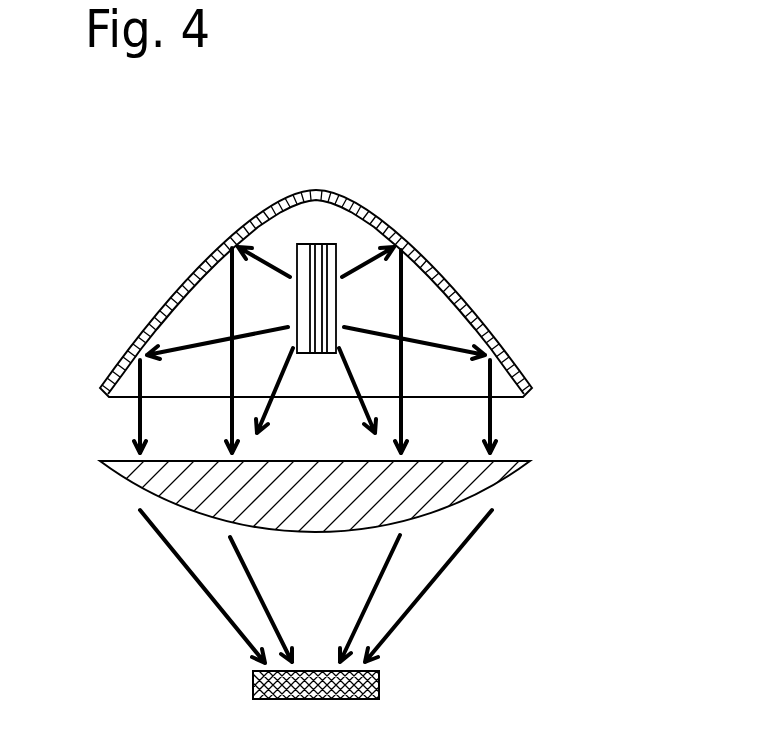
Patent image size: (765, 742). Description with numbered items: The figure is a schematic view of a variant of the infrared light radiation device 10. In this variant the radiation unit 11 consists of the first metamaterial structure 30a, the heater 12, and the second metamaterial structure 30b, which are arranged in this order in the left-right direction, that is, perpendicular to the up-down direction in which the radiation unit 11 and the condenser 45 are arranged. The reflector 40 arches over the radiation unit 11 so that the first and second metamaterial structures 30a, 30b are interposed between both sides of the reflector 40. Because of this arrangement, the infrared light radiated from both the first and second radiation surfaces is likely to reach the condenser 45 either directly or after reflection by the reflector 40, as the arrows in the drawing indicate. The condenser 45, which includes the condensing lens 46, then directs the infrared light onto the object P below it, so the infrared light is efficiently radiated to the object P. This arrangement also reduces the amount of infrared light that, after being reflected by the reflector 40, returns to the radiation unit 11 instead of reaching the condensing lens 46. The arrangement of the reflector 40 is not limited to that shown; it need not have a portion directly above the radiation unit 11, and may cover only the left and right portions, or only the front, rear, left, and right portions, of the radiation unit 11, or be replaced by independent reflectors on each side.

The infrared light radiation device 10 is at (532, 182).
The radiation unit 11 is at (380, 141).
The heater 12 is at (311, 244).
The first metamaterial structure 30a is at (302, 244).
The second metamaterial structure 30b is at (321, 244).
The reflector 40 is at (521, 368).
The condenser 45 is at (557, 537).
The condensing lens 46 is at (507, 492).
The object P is at (382, 682).